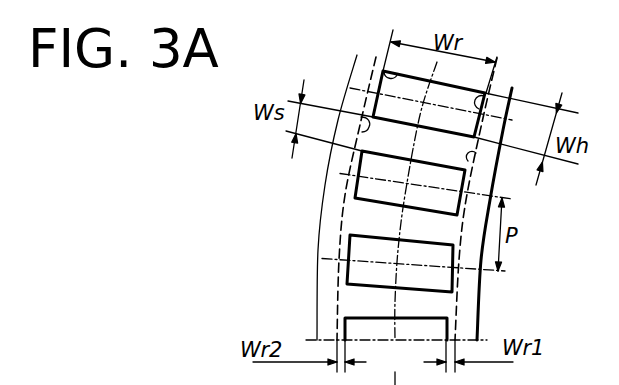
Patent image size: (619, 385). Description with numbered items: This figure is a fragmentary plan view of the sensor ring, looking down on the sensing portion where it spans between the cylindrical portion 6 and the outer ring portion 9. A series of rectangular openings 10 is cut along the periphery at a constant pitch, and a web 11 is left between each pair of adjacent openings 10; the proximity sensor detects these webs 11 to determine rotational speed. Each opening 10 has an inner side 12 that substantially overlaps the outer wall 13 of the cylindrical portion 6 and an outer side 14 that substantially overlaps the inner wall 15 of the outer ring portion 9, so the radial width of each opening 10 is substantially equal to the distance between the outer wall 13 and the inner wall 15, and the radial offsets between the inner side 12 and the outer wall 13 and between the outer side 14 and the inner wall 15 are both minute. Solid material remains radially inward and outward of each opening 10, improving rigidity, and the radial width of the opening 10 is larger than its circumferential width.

The cylindrical portion 6 is at (470, 312).
The outer ring portion 9 is at (340, 163).
The rectangular opening 10 is at (447, 97).
The web 11 is at (360, 303).
The inner side 12 is at (485, 97).
The outer wall 13 is at (470, 158).
The outer side 14 is at (397, 72).
The inner wall 15 is at (362, 118).